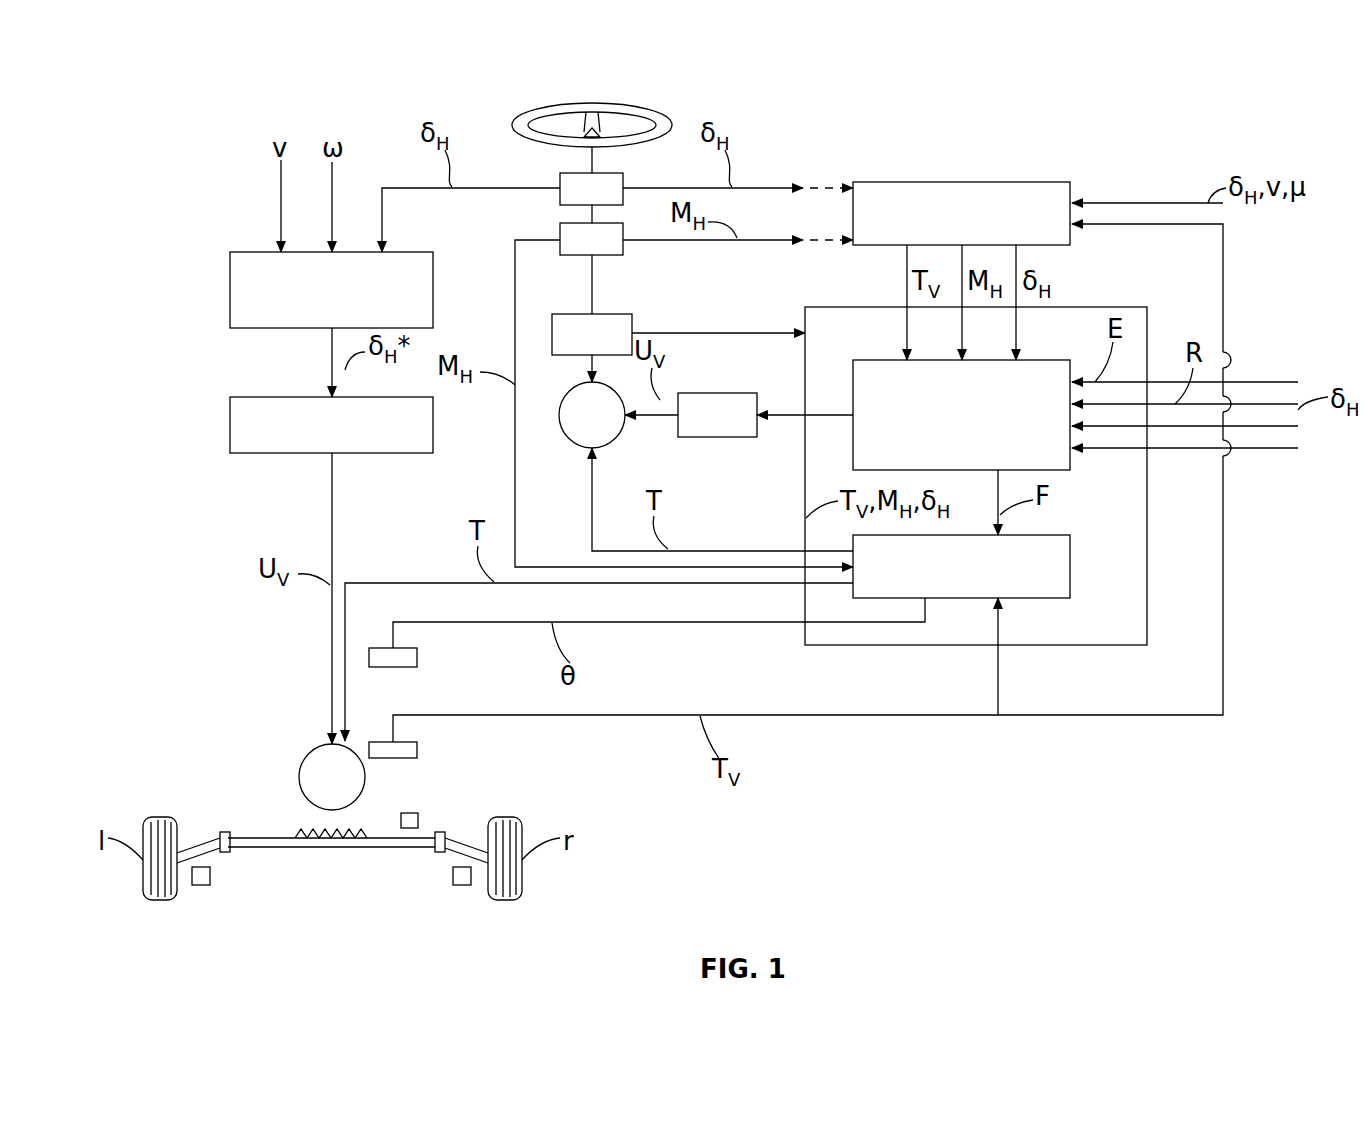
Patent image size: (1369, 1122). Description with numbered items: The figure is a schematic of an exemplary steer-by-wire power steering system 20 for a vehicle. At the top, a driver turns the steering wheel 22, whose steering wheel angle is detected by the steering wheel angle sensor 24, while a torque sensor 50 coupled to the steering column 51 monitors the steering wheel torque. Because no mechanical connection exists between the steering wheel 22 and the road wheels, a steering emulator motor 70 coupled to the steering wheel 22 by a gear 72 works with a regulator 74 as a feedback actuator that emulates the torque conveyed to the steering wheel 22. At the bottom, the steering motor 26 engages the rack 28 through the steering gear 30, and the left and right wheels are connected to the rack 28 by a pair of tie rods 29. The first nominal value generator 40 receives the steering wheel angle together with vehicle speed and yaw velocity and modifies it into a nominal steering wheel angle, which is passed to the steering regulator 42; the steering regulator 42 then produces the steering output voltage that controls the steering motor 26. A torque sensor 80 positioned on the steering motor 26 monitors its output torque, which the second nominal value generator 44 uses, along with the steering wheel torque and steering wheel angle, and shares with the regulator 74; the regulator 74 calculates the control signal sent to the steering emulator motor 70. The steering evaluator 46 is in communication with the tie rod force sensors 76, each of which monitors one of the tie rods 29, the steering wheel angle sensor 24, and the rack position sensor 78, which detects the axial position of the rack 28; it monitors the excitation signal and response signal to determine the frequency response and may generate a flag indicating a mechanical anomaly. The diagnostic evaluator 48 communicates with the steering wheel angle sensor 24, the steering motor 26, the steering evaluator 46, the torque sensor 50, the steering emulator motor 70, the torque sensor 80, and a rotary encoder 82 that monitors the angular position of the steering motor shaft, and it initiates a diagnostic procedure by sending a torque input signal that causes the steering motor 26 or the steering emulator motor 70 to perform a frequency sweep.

The power steering system 20 is at (812, 105).
The steering wheel 22 is at (592, 104).
The steering wheel angle sensor 24 is at (591, 189).
The steering motor 26 is at (576, 631).
The rack 28 is at (375, 849).
The tie rods 29 is at (205, 840).
The steering gear 30 is at (360, 830).
The first nominal value generator 40 is at (395, 244).
The steering regulator 42 is at (331, 390).
The second nominal value generator 44 is at (923, 271).
The steering evaluator 46 is at (1051, 476).
The diagnostic evaluator 48 is at (812, 483).
The torque sensor 50 is at (591, 230).
The steering column 51 is at (595, 283).
The steering emulator motor 70 is at (1290, 495).
The gear 72 is at (678, 348).
The regulator 74 is at (739, 415).
The tie rod force sensors 76 is at (210, 874).
The rack position sensor 78 is at (412, 813).
The torque sensor 80 is at (388, 742).
The rotary encoder 82 is at (388, 648).